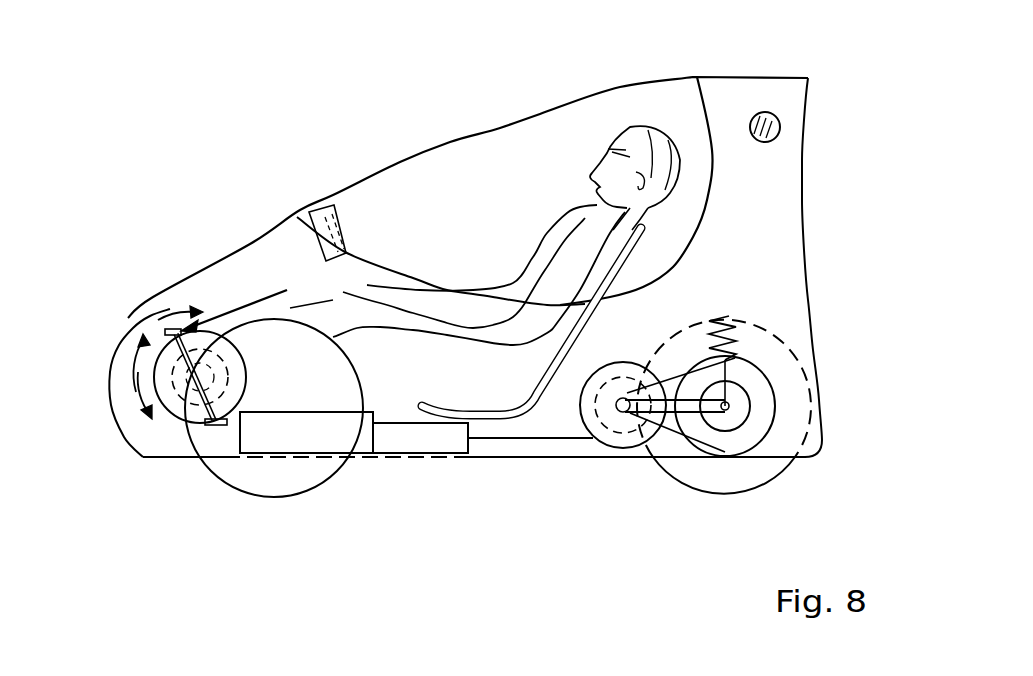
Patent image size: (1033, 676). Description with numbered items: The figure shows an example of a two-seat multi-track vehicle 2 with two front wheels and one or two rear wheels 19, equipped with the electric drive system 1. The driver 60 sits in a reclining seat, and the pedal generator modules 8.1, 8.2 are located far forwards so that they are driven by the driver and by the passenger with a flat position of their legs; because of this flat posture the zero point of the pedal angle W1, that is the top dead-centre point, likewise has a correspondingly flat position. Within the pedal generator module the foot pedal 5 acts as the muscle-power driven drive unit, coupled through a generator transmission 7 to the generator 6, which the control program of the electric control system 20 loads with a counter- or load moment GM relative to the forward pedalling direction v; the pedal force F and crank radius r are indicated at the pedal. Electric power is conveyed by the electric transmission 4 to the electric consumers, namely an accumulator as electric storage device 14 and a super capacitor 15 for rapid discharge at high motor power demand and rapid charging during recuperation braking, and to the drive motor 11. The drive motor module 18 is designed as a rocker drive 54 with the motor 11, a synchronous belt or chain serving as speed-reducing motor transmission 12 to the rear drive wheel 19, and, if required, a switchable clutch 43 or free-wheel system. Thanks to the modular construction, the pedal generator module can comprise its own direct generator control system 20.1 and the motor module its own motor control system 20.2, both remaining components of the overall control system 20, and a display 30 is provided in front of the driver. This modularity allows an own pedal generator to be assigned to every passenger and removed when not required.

The electric drive system 1 is at (492, 570).
The vehicle 2 is at (207, 165).
The electric transmission 4 is at (538, 442).
The foot pedal 5 is at (217, 427).
The generator 6 is at (167, 352).
The generator transmission 7 is at (222, 378).
The pedal generator module 8.1 is at (143, 436).
The pedal generator module 8.2 is at (172, 410).
The drive motor 11 is at (614, 421).
The speed-reducing motor transmission 12 is at (670, 372).
The electric storage device 14 is at (309, 478).
The super capacitor 15 is at (363, 440).
The motor module 18 is at (694, 470).
The drive wheel 19 is at (270, 496).
The electric control system 20 is at (430, 440).
The generator control system 20.1 is at (165, 405).
The motor control system 20.2 is at (627, 362).
The display 30 is at (320, 212).
The switchable clutch 43 is at (735, 398).
The rocker drive 54 is at (673, 413).
The driver 60 is at (628, 125).
The counter- or load moment GM is at (167, 323).
The pedal force F is at (238, 307).
The crank radius r is at (131, 368).
The forward pedalling direction v is at (137, 400).
The pedal angle W1 is at (232, 366).